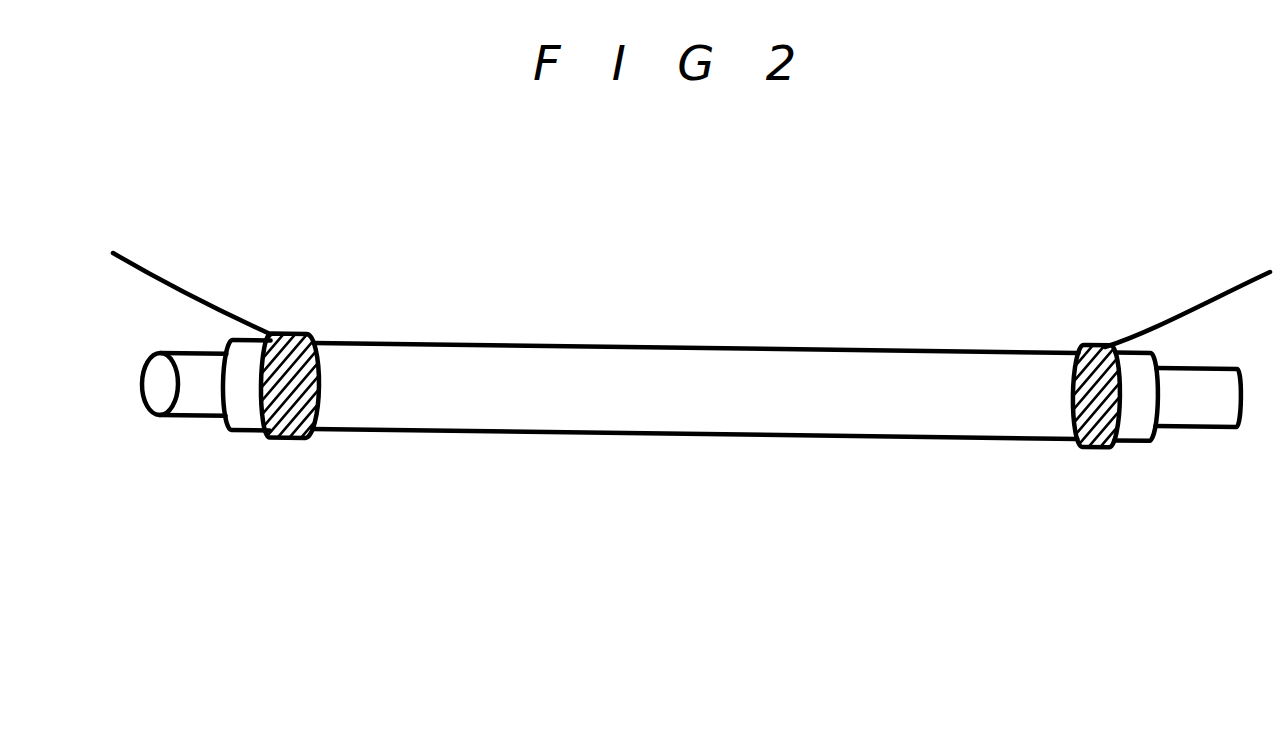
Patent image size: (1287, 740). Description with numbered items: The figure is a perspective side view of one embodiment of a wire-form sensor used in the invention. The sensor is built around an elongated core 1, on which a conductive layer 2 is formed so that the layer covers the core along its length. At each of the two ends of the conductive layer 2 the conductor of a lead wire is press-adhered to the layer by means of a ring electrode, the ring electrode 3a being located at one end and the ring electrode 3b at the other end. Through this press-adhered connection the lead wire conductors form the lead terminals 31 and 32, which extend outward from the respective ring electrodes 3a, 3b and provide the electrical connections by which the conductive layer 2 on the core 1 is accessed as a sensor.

The core 1 is at (200, 400).
The conductive layer 2 is at (862, 410).
The ring electrode 3a is at (1083, 447).
The ring electrode 3b is at (288, 438).
The lead terminal 31 is at (1213, 290).
The lead terminal 32 is at (178, 276).